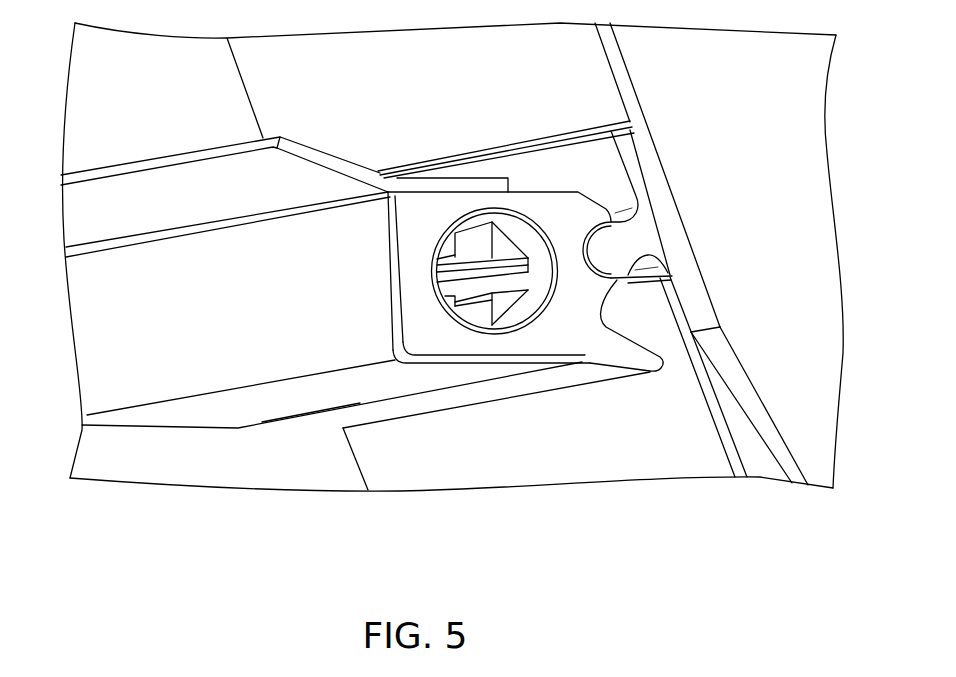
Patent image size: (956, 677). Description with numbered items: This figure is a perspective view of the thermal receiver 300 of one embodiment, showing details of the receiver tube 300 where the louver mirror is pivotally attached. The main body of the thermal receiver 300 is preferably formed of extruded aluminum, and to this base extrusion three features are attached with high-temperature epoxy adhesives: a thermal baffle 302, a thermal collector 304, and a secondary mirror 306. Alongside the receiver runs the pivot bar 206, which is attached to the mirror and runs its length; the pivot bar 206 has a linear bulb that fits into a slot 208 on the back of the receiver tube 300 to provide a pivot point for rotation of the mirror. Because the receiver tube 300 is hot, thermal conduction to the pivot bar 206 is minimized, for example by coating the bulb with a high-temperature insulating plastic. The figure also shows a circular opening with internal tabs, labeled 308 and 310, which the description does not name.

The pivot bar 206 is at (653, 233).
The slot 208 is at (628, 280).
The thermal receiver tube 300 is at (603, 210).
The thermal baffle 302 is at (213, 170).
The thermal collector 304 is at (182, 415).
The secondary mirror 306 is at (308, 422).
The aperture 308 is at (478, 330).
The retaining tabs 310 is at (503, 243).